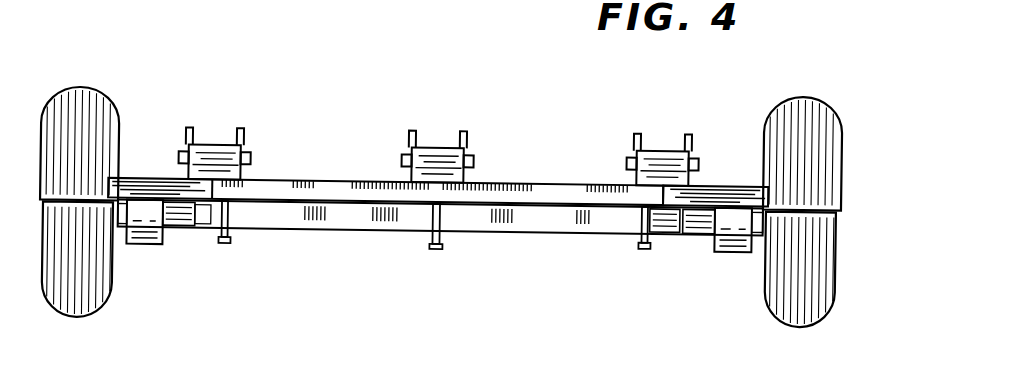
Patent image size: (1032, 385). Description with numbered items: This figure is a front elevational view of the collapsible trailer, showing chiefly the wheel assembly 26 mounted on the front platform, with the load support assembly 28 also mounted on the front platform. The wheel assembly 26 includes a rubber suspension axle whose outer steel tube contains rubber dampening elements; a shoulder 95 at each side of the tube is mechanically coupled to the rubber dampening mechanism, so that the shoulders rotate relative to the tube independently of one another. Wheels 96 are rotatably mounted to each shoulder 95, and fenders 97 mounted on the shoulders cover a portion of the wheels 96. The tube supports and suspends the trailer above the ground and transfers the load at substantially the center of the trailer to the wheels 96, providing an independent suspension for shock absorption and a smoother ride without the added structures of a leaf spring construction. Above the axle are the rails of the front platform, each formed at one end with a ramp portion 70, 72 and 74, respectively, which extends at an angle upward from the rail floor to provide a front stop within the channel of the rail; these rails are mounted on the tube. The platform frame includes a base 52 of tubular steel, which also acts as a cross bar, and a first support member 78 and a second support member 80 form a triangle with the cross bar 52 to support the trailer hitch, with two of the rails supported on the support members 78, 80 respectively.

The wheel assembly 26 is at (512, 242).
The load support assembly 28 is at (221, 258).
The base 52 is at (732, 190).
The ramp portion 70 is at (672, 150).
The ramp portion 72 is at (218, 142).
The ramp portion 74 is at (445, 143).
The first support member 78 is at (572, 195).
The second support member 80 is at (356, 183).
The shoulder 95 is at (150, 246).
The wheels 96 is at (100, 302).
The fenders 97 is at (105, 78).